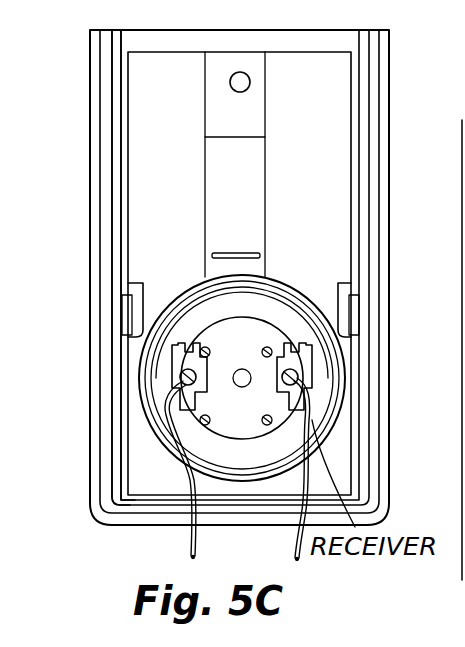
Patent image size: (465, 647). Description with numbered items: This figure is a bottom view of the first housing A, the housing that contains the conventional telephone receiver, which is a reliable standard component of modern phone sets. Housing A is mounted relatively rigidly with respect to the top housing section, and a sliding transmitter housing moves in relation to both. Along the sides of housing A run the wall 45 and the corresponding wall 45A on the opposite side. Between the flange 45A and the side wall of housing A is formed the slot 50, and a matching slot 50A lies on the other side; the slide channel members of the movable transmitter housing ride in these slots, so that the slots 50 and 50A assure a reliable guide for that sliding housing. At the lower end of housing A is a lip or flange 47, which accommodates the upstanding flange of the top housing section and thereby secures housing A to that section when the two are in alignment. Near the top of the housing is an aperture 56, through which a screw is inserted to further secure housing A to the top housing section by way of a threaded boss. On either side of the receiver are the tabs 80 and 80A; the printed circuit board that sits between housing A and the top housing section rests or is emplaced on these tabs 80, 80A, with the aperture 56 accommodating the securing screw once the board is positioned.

The lip or flange 47 is at (165, 503).
The slot 50 is at (372, 134).
The slot 50A is at (107, 233).
The wall 45 is at (357, 222).
The wall 45A is at (123, 152).
The aperture 56 is at (228, 83).
The tab 80 is at (343, 284).
The tab 80A is at (147, 288).
The first housing A is at (409, 419).